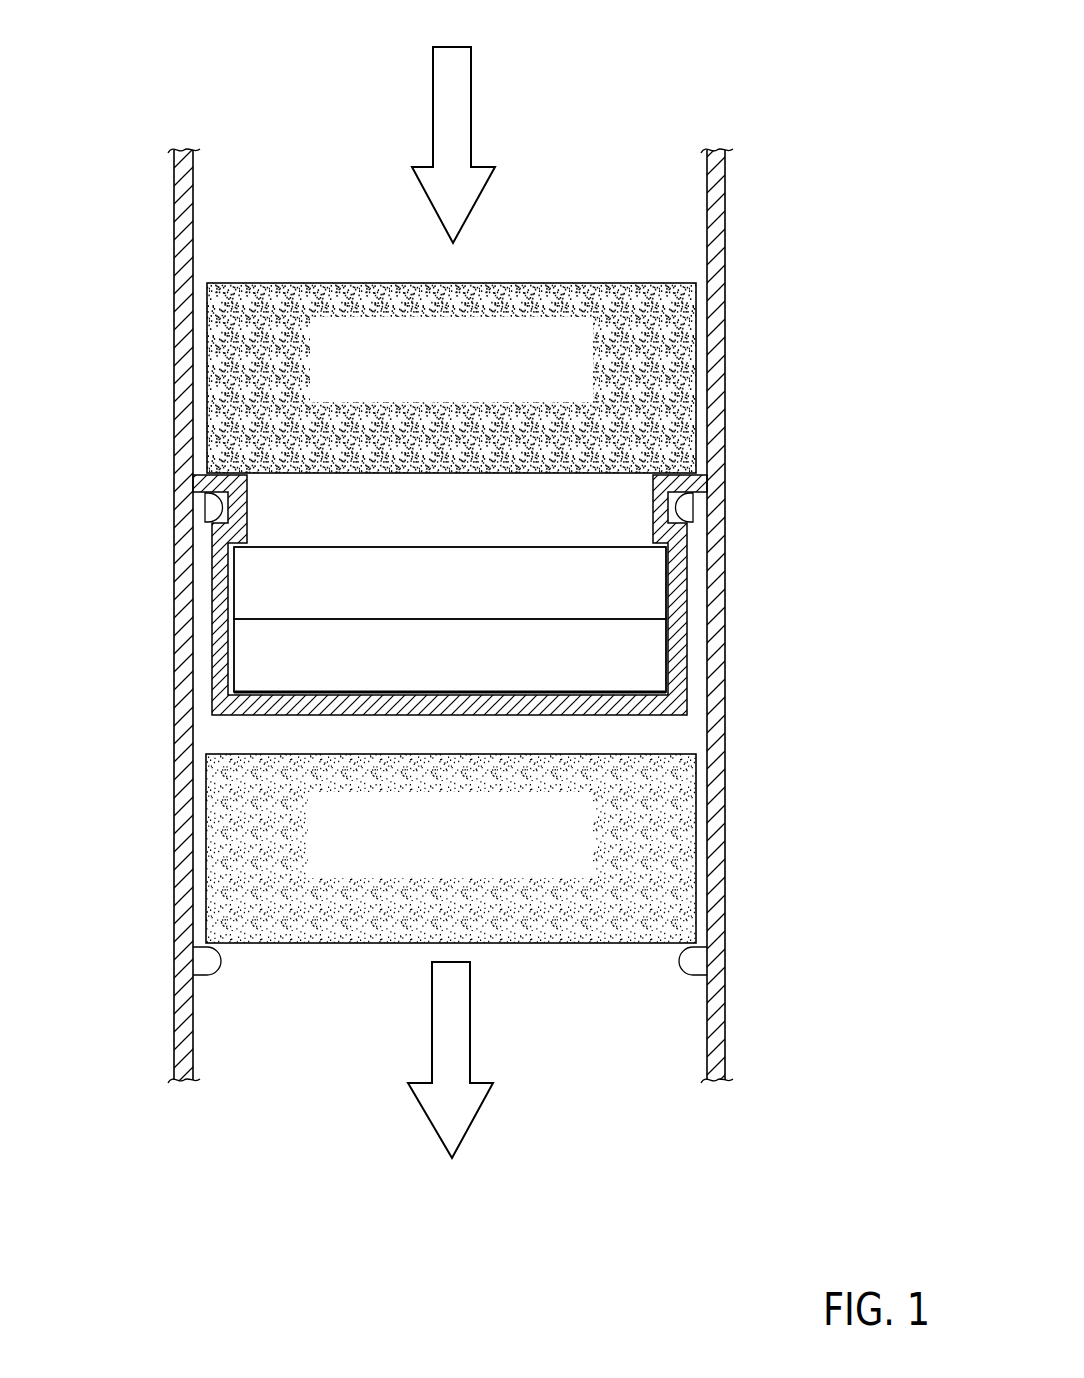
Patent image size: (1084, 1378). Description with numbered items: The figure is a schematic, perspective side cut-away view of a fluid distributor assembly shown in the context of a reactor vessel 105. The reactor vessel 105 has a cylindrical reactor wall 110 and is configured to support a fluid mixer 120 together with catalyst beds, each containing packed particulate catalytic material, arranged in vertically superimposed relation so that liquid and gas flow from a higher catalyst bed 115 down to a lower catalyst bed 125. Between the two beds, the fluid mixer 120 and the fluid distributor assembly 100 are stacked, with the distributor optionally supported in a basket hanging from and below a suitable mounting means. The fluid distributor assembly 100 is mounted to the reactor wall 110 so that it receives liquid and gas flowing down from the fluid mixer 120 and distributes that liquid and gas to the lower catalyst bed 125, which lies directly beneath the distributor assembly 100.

The reactor vessel 105 is at (808, 157).
The reactor wall 110 is at (187, 308).
The higher catalyst bed 115 is at (463, 390).
The fluid mixer 120 is at (645, 612).
The fluid distributor assembly 100 is at (645, 680).
The lower catalyst bed 125 is at (463, 865).